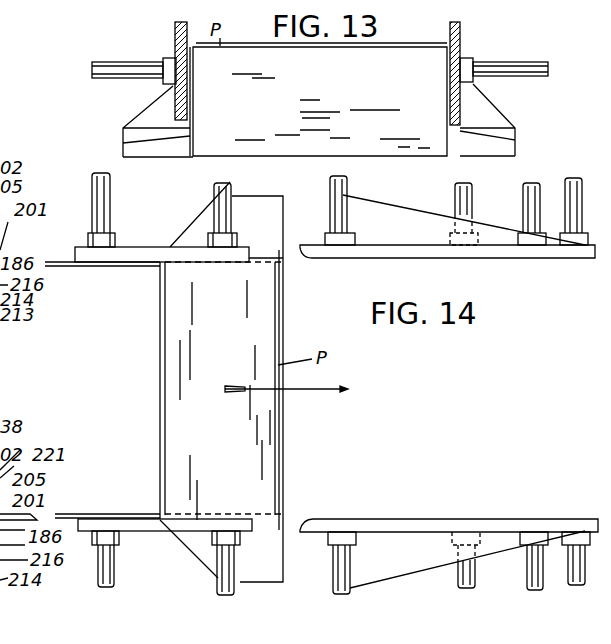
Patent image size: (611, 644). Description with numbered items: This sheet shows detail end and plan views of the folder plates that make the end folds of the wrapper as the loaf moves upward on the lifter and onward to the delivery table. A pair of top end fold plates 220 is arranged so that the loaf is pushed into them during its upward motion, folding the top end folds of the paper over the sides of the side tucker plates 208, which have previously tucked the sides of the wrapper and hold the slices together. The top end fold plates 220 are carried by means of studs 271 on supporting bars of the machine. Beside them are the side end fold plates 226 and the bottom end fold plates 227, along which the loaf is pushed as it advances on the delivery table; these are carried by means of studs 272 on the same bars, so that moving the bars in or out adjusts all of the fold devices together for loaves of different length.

In FIG. 13, the side tucker plate 208 is at (123, 144).
In FIG. 14, the side tucker plate 208 is at (102, 266).
In FIG. 13, the top end fold plate 220 is at (175, 30).
In FIG. 14, the top end fold plate 220 is at (157, 258).
In FIG. 13, the stud 271 is at (100, 84).
In FIG. 14, the stud 271 is at (110, 185).
In FIG. 14, the side end fold plate 226 is at (447, 253).
In FIG. 14, the bottom end fold plate 227 is at (409, 207).
In FIG. 14, the stud 272 is at (523, 192).